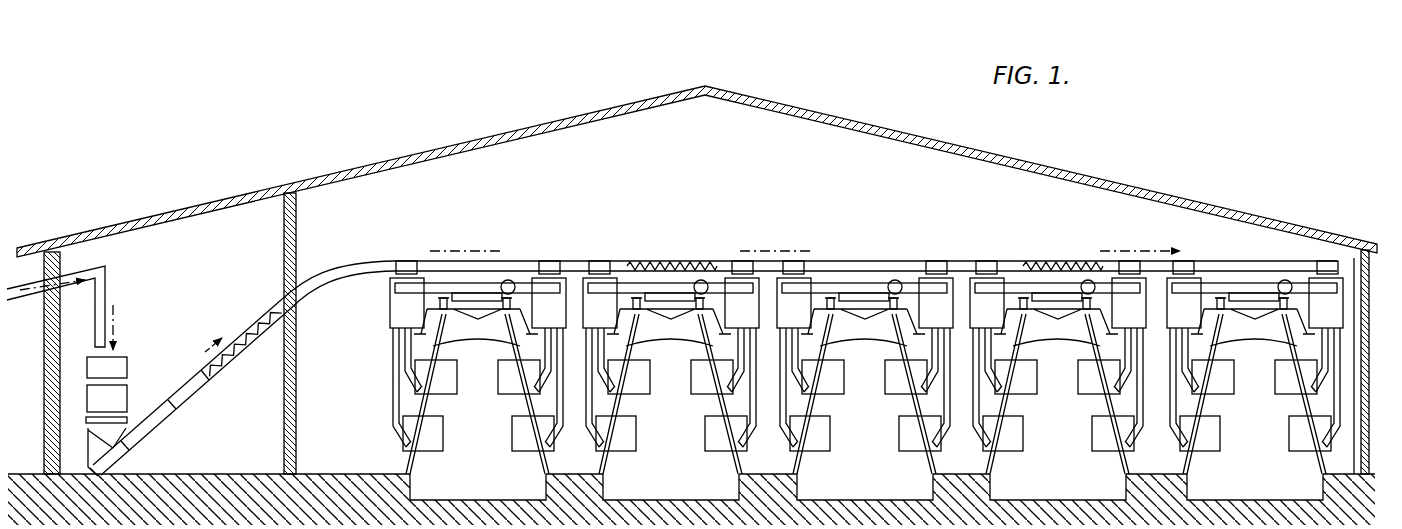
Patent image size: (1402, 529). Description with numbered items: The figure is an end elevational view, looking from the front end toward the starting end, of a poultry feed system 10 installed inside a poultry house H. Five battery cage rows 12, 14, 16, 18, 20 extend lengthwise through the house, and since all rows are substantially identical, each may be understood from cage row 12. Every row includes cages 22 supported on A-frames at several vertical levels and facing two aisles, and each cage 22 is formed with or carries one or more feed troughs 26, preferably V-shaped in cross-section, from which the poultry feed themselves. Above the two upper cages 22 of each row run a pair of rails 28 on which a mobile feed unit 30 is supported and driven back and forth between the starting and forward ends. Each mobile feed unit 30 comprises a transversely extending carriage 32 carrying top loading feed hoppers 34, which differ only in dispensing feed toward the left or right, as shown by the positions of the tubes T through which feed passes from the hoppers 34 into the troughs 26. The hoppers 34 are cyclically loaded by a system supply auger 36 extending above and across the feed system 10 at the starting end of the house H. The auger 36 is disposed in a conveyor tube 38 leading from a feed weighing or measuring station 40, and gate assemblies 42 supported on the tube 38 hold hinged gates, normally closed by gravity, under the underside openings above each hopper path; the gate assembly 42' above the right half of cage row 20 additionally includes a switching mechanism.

The feed system 10 is at (664, 154).
The poultry house H is at (1112, 180).
The battery cage row 12 is at (568, 407).
The battery cage row 14 is at (750, 395).
The battery cage row 16 is at (940, 390).
The battery cage row 18 is at (1130, 385).
The battery cage row 20 is at (1330, 398).
The cages 22 is at (512, 378).
The feed troughs 26 is at (406, 390).
The rails 28 is at (470, 352).
The mobile feed unit 30 is at (386, 318).
The carriage 32 is at (506, 296).
The feed hoppers 34 is at (866, 303).
The system supply auger 36 is at (647, 261).
The conveyor tube 38 is at (321, 262).
The feed weighing or measuring station 40 is at (141, 367).
The gate assembly 42 is at (786, 246).
The gate assembly 42' is at (1296, 253).
The tubes T is at (388, 405).